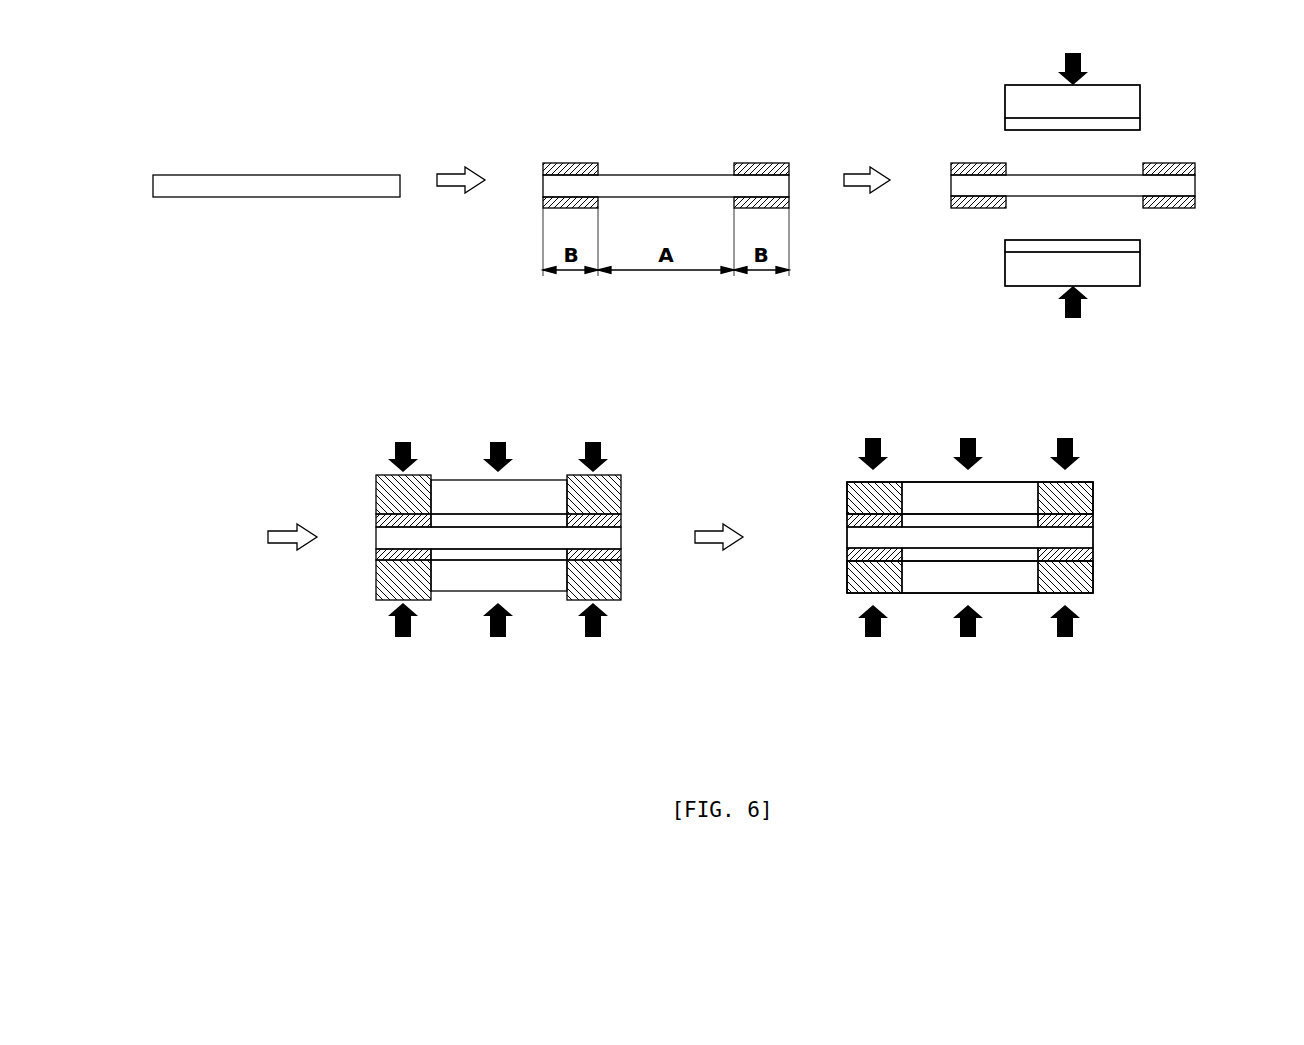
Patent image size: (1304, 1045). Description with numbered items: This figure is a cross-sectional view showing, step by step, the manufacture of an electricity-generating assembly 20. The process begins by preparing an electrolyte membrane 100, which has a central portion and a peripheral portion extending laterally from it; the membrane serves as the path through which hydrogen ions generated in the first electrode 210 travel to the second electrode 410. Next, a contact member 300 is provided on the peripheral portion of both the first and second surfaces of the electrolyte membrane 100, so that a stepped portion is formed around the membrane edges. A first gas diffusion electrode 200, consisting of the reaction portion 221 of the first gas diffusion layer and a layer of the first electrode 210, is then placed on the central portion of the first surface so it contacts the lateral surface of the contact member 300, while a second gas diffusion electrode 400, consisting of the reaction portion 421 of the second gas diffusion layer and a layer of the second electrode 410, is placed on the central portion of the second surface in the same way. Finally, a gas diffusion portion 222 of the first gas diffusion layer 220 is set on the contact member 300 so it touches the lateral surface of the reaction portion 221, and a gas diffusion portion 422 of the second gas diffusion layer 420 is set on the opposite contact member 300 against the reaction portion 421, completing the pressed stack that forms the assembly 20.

The electrolyte membrane 100 is at (275, 178).
The contact member 300 is at (548, 200).
The first gas diffusion electrode 200 is at (1222, 69).
The reaction portion of the first GDL 221 is at (1138, 103).
The first electrode 210 is at (1140, 125).
The gas diffusion portion of the first GDL 222 is at (385, 480).
The first gas diffusion layer 220 is at (875, 394).
The second gas diffusion electrode 400 is at (1222, 230).
The second electrode 410 is at (1140, 243).
The reaction portion of the second GDL 421 is at (1140, 268).
The gas diffusion portion of the second GDL 422 is at (385, 595).
The second gas diffusion layer 420 is at (875, 682).
The electricity-generating assembly 20 is at (769, 414).